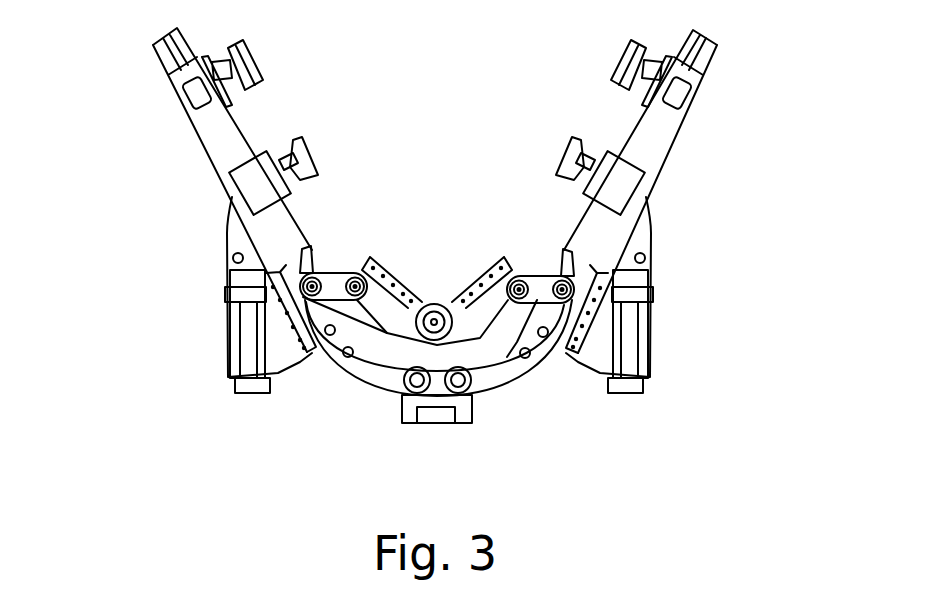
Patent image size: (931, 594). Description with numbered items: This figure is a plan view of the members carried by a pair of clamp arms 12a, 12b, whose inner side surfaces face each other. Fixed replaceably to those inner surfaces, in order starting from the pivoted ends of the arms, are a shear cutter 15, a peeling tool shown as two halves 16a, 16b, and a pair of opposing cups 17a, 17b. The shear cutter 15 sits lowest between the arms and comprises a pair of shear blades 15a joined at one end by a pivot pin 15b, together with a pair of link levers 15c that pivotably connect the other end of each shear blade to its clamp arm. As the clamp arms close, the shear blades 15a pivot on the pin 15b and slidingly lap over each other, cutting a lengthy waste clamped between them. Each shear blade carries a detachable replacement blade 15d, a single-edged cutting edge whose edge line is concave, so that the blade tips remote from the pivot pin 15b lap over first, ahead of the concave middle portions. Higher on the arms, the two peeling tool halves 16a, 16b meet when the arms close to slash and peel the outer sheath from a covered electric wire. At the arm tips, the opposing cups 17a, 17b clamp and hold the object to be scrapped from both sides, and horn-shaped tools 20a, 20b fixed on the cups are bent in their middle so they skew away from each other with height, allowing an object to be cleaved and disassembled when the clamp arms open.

The clamp arm 12a is at (220, 146).
The clamp arm 12b is at (653, 145).
The shear cutter 15 is at (447, 428).
The shear blades 15a is at (388, 318).
The pivot pin 15b is at (447, 428).
The link levers 15c is at (303, 358).
The replacement blade 15d is at (380, 258).
The peeling tool half 16a is at (235, 183).
The peeling tool half 16b is at (630, 177).
The opposing cup 17a is at (204, 64).
The opposing cup 17b is at (686, 63).
The horn-shaped tool 20a is at (188, 90).
The horn-shaped tool 20b is at (680, 96).